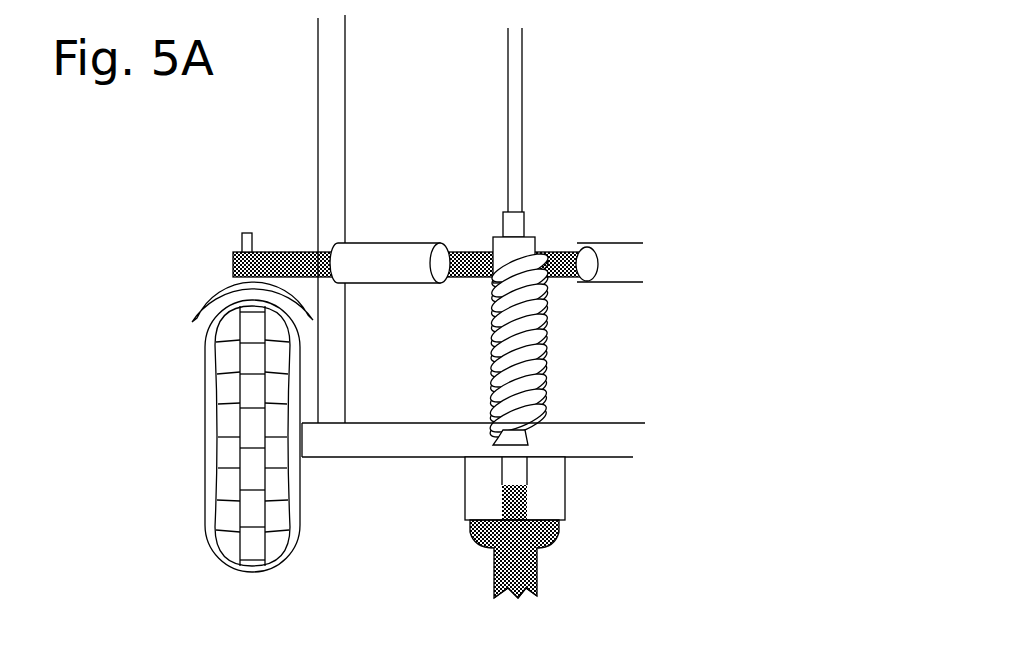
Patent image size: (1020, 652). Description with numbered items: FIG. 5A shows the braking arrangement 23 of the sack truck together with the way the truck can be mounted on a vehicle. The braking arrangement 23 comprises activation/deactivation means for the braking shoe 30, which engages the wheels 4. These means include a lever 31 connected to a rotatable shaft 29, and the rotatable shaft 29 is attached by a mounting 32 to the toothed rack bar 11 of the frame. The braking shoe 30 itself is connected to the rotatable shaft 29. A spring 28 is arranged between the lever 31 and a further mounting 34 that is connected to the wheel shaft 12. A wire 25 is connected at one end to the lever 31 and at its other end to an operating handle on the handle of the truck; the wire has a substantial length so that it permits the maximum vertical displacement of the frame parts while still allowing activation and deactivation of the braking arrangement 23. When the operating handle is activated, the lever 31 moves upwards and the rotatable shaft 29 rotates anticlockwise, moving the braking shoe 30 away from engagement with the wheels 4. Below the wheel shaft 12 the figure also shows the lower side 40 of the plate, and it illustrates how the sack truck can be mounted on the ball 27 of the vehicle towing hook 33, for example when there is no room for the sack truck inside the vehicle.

The wheels 4 is at (222, 462).
The toothed rack bar 11 is at (340, 127).
The wheel shaft 12 is at (602, 447).
The braking arrangement 23 is at (735, 117).
The wire 25 is at (515, 138).
The ball 27 is at (475, 533).
The spring 28 is at (553, 395).
The rotatable shaft 29 is at (580, 243).
The braking shoe 30 is at (207, 305).
The lever 31 is at (538, 210).
The mounting 32 is at (418, 210).
The vehicle towing hook 33 is at (537, 600).
The mounting 34 is at (495, 435).
The lower side 40 is at (473, 492).